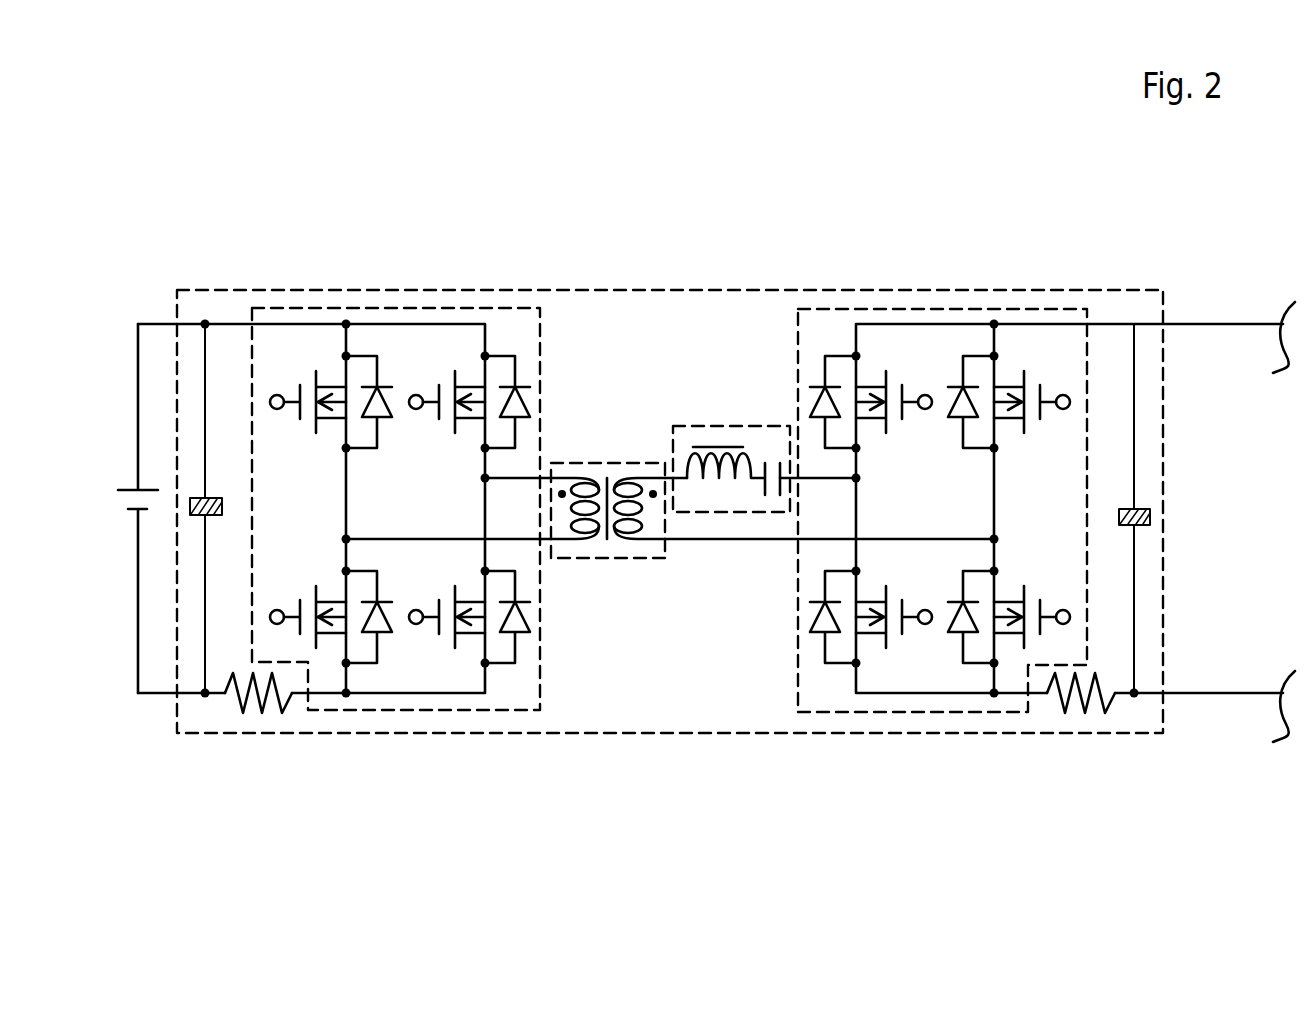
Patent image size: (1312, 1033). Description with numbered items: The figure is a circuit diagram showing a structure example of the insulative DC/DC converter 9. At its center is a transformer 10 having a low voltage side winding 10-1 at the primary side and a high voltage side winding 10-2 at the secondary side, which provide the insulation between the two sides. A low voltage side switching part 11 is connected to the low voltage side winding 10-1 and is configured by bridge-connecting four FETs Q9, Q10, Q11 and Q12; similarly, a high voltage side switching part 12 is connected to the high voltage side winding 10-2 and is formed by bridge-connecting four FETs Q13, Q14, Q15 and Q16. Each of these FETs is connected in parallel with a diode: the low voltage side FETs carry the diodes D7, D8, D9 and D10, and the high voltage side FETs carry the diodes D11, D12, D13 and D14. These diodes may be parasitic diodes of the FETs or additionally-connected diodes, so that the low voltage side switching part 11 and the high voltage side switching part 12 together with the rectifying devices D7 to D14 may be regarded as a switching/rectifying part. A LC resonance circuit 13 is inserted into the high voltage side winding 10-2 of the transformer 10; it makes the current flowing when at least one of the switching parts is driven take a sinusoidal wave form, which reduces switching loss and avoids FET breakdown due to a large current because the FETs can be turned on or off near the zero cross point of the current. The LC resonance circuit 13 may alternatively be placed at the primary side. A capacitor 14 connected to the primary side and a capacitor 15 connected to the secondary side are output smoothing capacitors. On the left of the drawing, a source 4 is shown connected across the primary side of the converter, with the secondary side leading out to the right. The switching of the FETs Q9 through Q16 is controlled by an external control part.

The DC power source (battery) 4 is at (130, 482).
The insulative DC/DC converter 9 is at (590, 289).
The transformer 10 is at (604, 462).
The low voltage side winding 10-1 is at (583, 548).
The high voltage side winding 10-2 is at (630, 548).
The low voltage side switching part 11 is at (517, 308).
The high voltage side switching part 12 is at (797, 670).
The LC resonance circuit 13 is at (707, 425).
The capacitor 14 is at (215, 487).
The capacitor 15 is at (1124, 499).
The FET Q9 is at (317, 355).
The FET Q10 is at (455, 355).
The FET Q11 is at (322, 653).
The FET Q12 is at (458, 653).
The FET Q13 is at (880, 362).
The FET Q14 is at (1027, 362).
The FET Q15 is at (880, 655).
The FET Q16 is at (1018, 655).
The diode D7 is at (387, 425).
The diode D8 is at (533, 407).
The diode D9 is at (392, 608).
The diode D10 is at (525, 637).
The diode D11 is at (808, 400).
The diode D12 is at (953, 430).
The diode D13 is at (810, 622).
The diode D14 is at (947, 613).